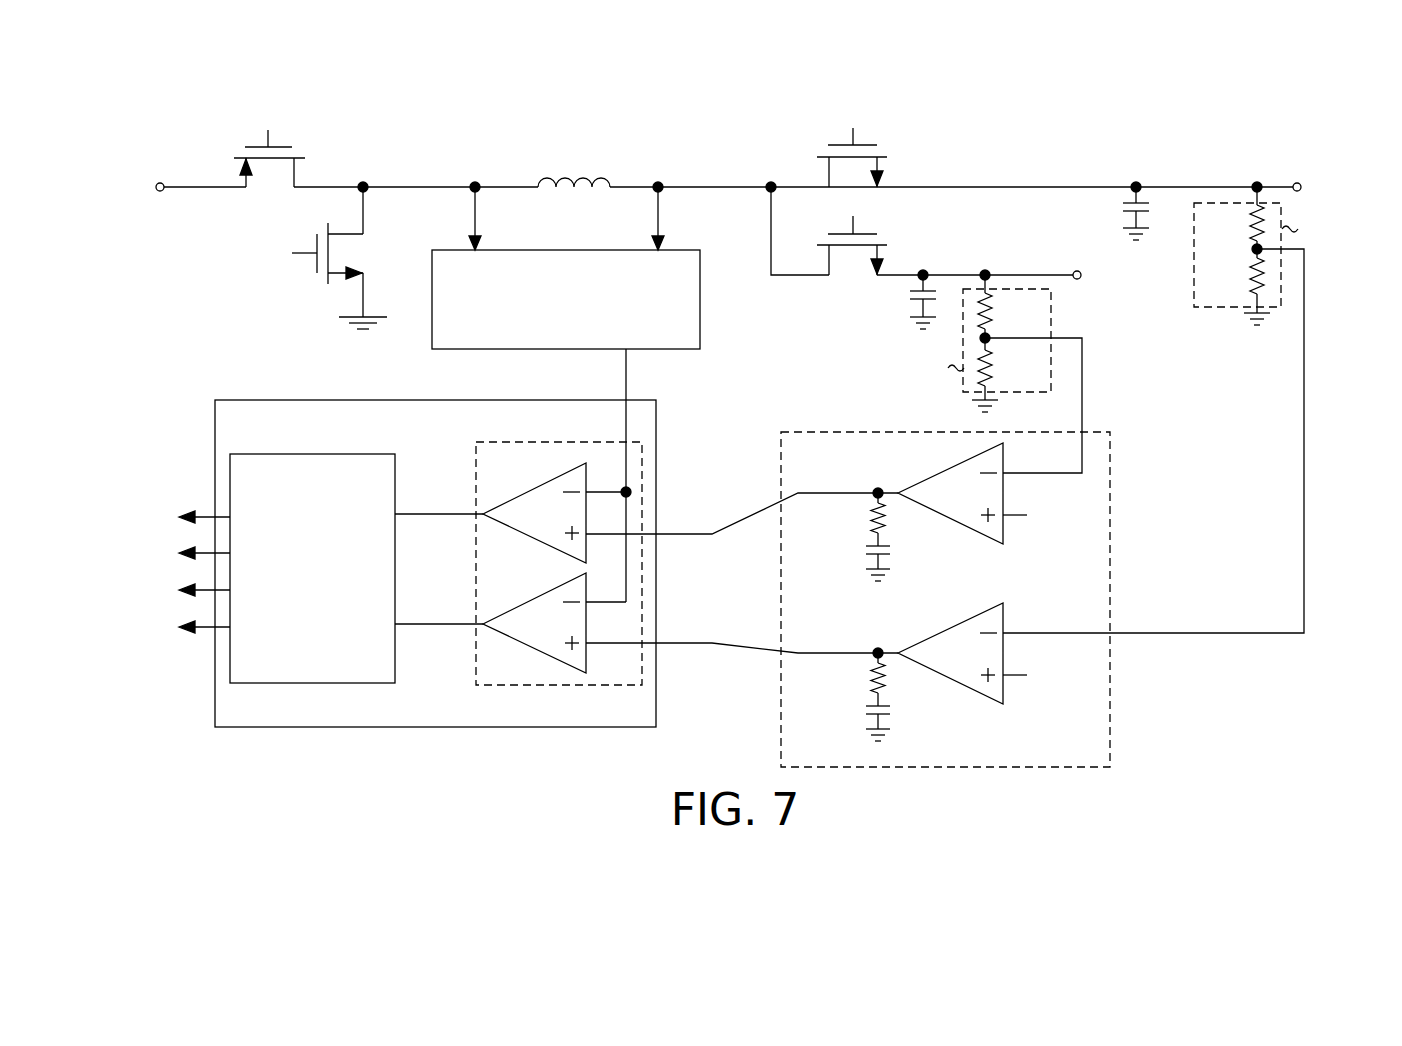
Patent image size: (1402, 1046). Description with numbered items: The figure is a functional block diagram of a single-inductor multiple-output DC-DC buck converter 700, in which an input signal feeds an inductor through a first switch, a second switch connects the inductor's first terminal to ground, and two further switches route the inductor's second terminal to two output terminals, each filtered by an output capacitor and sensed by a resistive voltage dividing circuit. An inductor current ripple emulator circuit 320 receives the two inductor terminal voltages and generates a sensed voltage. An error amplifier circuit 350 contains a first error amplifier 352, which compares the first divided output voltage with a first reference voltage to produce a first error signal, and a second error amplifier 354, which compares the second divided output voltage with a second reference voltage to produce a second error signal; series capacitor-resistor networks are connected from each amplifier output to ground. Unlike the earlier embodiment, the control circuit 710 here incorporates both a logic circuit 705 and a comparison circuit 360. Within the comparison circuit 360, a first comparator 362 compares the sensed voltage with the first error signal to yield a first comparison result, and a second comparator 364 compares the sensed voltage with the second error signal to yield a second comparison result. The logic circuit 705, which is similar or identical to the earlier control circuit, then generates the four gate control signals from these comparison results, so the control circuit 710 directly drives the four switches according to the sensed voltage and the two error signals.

The SIMO DC-DC buck converter 700 is at (136, 117).
The inductor current ripple emulator circuit 320 is at (546, 250).
The control circuit 710 is at (212, 415).
The logic circuit 705 is at (385, 454).
The comparison circuit 360 is at (548, 442).
The comparator 362 is at (524, 488).
The comparator 364 is at (524, 598).
The error amplifier circuit 350 is at (1111, 700).
The error amplifier 352 is at (946, 526).
The error amplifier 354 is at (943, 626).